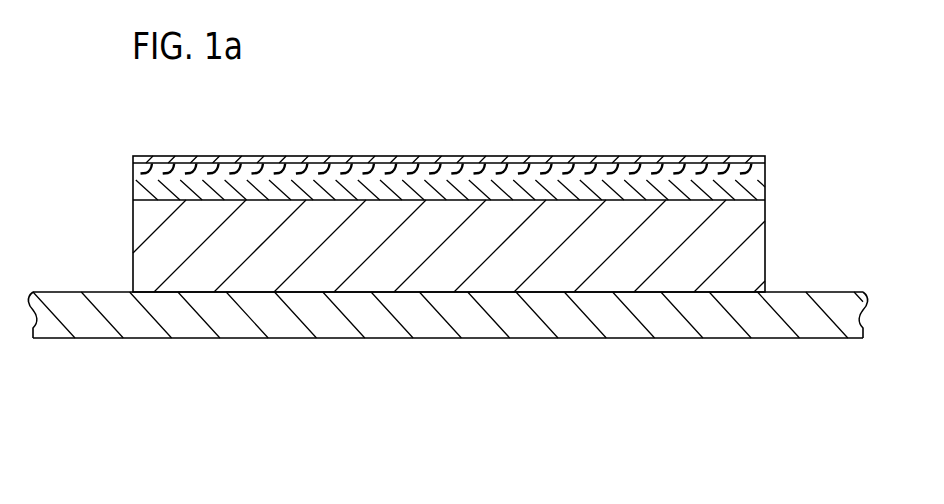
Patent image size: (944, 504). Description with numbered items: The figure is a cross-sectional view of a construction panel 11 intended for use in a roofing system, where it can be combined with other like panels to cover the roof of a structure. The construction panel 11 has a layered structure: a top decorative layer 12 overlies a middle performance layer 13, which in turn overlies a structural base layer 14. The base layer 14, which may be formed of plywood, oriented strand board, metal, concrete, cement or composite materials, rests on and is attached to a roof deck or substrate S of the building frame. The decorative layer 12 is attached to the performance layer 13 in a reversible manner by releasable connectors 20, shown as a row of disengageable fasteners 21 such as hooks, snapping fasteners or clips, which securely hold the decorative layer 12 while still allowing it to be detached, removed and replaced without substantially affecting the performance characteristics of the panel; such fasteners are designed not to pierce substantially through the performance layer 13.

The construction panel 11 is at (448, 177).
The decorative layer 12 is at (145, 158).
The performance layer 13 is at (146, 188).
The base layer 14 is at (145, 252).
The releasable connectors 20 is at (488, 140).
The disengageable fasteners 21 is at (364, 168).
The substrate S is at (423, 322).